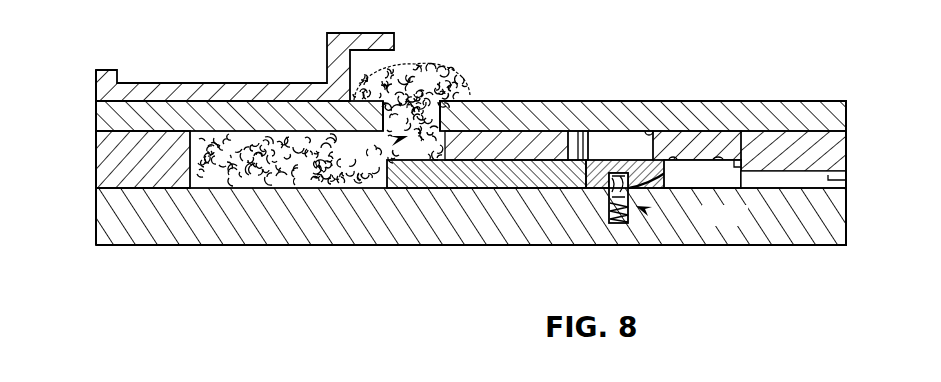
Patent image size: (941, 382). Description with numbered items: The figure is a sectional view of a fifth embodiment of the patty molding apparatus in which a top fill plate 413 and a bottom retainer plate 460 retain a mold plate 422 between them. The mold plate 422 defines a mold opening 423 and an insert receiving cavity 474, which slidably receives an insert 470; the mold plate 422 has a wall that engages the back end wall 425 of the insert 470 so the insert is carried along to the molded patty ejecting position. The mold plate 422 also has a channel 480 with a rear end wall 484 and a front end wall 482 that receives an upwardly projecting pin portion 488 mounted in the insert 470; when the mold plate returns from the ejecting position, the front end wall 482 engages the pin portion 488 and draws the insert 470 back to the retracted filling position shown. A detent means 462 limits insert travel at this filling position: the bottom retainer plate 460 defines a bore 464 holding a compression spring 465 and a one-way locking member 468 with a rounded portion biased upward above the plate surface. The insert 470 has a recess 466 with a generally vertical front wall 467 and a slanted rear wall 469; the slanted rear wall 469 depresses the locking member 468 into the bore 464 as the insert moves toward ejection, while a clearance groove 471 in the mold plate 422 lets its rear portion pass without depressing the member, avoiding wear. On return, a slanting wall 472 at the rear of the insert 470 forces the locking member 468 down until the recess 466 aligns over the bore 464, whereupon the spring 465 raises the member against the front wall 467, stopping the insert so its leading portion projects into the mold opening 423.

The top fill plate 413 is at (740, 130).
The mold plate 422 is at (837, 150).
The mold opening 423 is at (235, 130).
The back end wall 425 is at (693, 160).
The bottom retainer plate 460 is at (878, 207).
The detent means 462 is at (645, 195).
The bore 464 is at (609, 183).
The compression spring 465 is at (620, 225).
The recess 466 is at (622, 175).
The front wall 467 is at (606, 171).
The locking member 468 is at (655, 192).
The rear wall 469 is at (664, 173).
The insert 470 is at (478, 175).
The clearance groove 471 is at (830, 180).
The slanting wall 472 is at (715, 160).
The insert receiving cavity 474 is at (750, 125).
The channel 480 is at (603, 138).
The front end wall 482 is at (573, 148).
The rear end wall 484 is at (653, 136).
The pin portion 488 is at (577, 131).